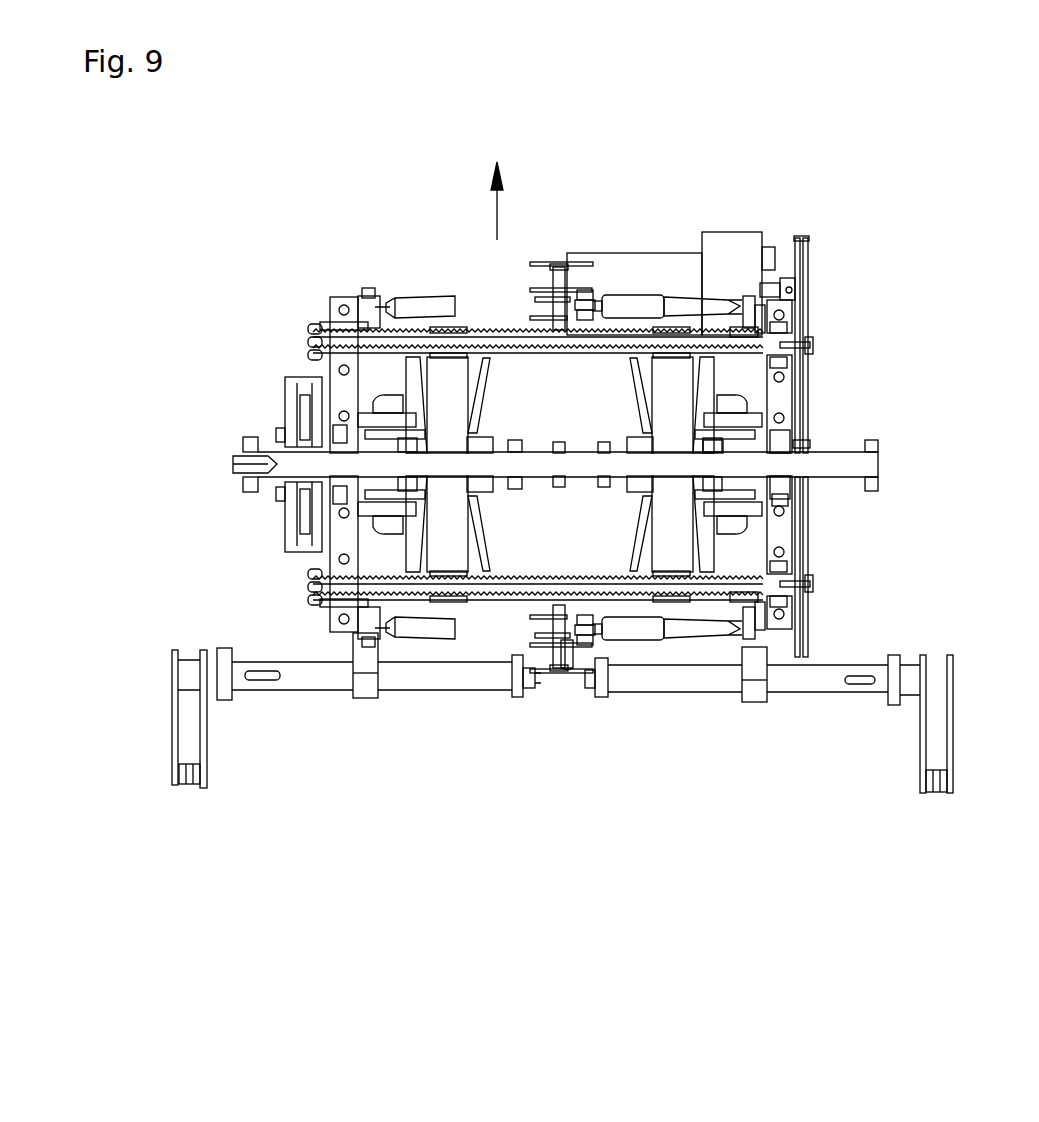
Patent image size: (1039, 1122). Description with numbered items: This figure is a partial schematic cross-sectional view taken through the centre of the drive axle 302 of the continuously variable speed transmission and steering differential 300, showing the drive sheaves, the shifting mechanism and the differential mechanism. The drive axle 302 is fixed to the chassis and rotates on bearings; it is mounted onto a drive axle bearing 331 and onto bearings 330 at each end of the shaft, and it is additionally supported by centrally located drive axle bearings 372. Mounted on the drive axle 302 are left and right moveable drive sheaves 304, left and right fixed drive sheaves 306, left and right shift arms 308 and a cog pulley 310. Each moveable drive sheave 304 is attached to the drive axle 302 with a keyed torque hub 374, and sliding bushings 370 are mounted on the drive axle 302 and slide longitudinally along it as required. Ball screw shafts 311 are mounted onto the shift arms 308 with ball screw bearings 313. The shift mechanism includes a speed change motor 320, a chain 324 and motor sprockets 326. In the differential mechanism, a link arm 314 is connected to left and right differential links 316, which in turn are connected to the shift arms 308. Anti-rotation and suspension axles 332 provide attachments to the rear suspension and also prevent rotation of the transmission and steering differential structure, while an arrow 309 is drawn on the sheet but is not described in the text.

The continuously variable speed transmission and steering differential 300 is at (413, 772).
The drive axle 302 is at (257, 476).
The moveable drive sheave 304 is at (408, 352).
The fixed drive sheave 306 is at (490, 330).
The shift arm 308 is at (336, 377).
The direction arrow 309 is at (497, 203).
The cog pulley 310 is at (290, 384).
The ball screw shaft 311 is at (378, 293).
The ball screw bearing 313 is at (321, 322).
The link arm 314 is at (575, 650).
The differential link 316 is at (713, 304).
The speed change motor 320 is at (668, 266).
The chain 324 is at (808, 444).
The motor sprocket 326 is at (814, 248).
The bearing 330 is at (243, 442).
The drive axle bearing 331 is at (784, 500).
The anti-rotation and suspension axle 332 is at (652, 682).
The sliding bushing 370 is at (320, 474).
The drive axle bearing 372 is at (562, 450).
The keyed torque hub 374 is at (722, 450).